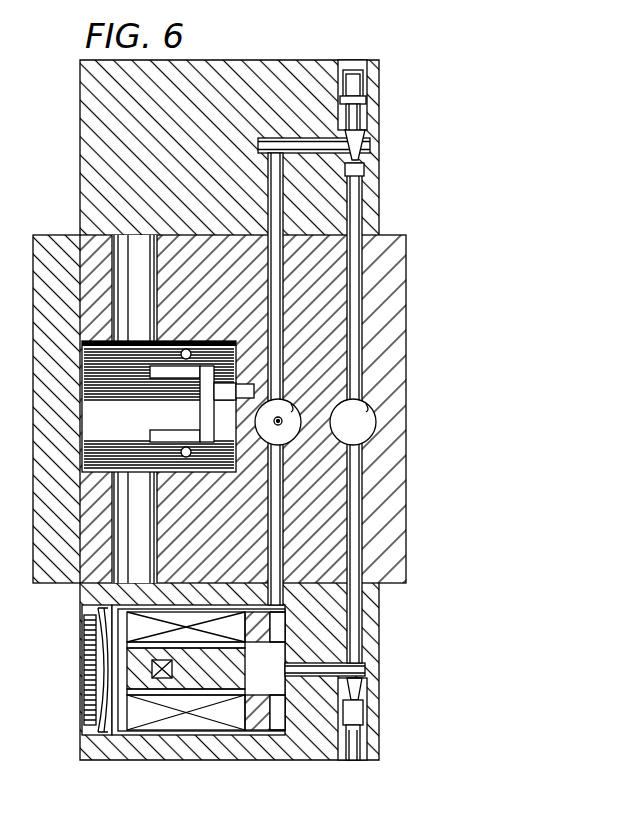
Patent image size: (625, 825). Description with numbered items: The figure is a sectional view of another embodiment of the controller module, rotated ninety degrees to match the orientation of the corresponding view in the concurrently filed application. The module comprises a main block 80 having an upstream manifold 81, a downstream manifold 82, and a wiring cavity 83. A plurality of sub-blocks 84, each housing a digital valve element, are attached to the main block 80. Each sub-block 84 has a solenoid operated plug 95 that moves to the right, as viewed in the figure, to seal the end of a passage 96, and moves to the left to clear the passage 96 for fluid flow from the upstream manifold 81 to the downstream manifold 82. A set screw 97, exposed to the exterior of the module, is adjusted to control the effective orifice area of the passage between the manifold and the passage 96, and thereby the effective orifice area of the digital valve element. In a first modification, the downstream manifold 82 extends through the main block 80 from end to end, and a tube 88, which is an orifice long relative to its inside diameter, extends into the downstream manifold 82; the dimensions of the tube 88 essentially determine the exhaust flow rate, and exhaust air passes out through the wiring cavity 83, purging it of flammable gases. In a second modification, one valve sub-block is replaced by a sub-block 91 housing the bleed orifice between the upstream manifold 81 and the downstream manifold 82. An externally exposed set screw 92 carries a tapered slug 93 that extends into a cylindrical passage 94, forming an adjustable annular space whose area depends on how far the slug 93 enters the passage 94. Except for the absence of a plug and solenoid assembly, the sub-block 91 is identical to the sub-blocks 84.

The main block 80 is at (405, 277).
The upstream manifold 81 is at (372, 408).
The downstream manifold 82 is at (296, 407).
The wiring cavity 83 is at (145, 473).
The sub-block 84 is at (121, 761).
The tube 88 is at (282, 426).
The sub-block 91 is at (213, 60).
The set screw 92 is at (361, 62).
The tapered slug 93 is at (376, 151).
The cylindrical passage 94 is at (376, 192).
The solenoid operated plug 95 is at (196, 687).
The passage 96 is at (333, 668).
The set screw 97 is at (352, 752).